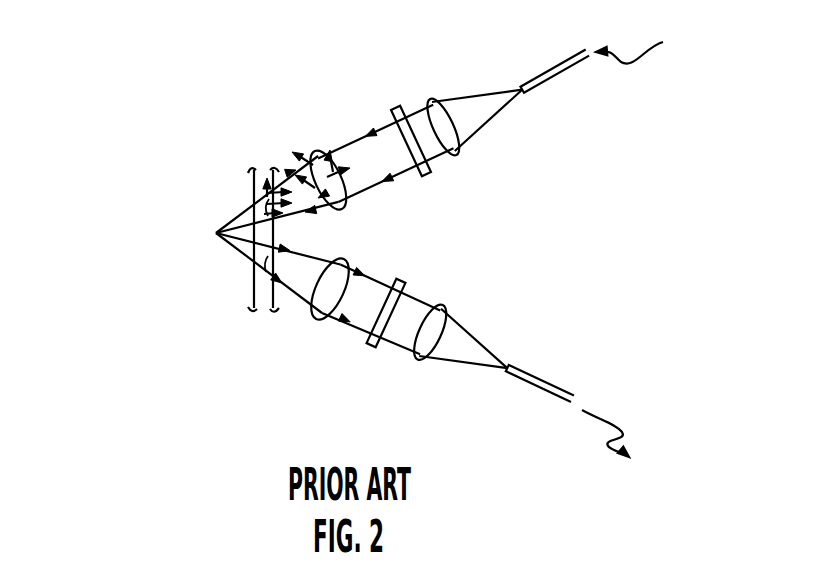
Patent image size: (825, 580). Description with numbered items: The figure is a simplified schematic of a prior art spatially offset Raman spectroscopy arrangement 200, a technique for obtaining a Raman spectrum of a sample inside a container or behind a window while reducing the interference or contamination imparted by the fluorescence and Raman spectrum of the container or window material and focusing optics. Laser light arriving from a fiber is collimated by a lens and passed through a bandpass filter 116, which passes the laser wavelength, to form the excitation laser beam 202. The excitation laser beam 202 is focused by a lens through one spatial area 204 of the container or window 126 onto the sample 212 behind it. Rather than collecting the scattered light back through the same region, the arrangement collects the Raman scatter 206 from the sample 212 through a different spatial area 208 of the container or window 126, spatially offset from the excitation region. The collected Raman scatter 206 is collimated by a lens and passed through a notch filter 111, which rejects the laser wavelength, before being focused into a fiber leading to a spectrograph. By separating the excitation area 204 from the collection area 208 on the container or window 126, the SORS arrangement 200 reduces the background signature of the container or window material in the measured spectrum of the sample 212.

The SORS arrangement 200 is at (160, 147).
The container or window 126 is at (262, 167).
The spatial area 204 is at (253, 203).
The spatial area 208 is at (256, 262).
The excitation laser beam 202 is at (237, 217).
The Raman scatter 206 is at (235, 250).
The sample 212 is at (168, 250).
The bandpass filter 116 is at (399, 108).
The notch filter 111 is at (378, 342).